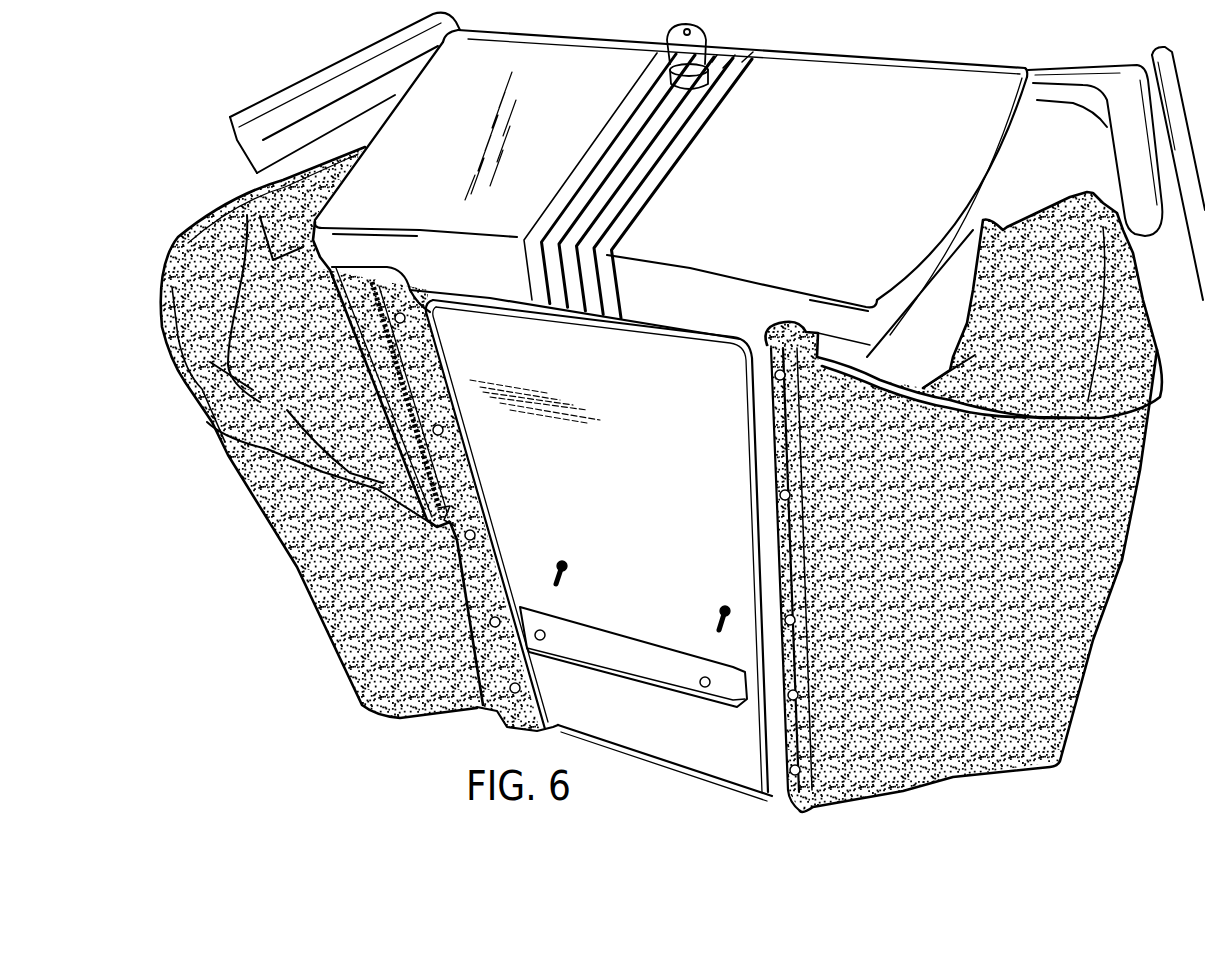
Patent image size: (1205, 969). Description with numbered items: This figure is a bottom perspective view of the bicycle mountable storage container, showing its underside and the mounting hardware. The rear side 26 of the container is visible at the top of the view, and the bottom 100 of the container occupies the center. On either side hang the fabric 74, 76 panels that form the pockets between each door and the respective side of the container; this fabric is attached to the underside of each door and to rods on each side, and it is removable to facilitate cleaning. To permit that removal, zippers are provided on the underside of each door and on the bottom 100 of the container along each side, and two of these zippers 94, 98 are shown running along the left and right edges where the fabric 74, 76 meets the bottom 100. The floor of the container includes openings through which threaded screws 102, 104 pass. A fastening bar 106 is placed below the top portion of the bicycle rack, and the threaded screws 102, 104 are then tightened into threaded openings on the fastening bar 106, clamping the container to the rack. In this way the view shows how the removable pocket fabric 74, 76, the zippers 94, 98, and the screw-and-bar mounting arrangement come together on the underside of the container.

The rear side 26 is at (842, 150).
The fabric 74 is at (304, 299).
The fabric 76 is at (1024, 323).
The zipper 94 is at (421, 487).
The zipper 98 is at (777, 442).
The bottom 100 is at (621, 383).
The threaded screw 102 is at (563, 557).
The threaded screw 104 is at (725, 604).
The fastening bar 106 is at (634, 638).